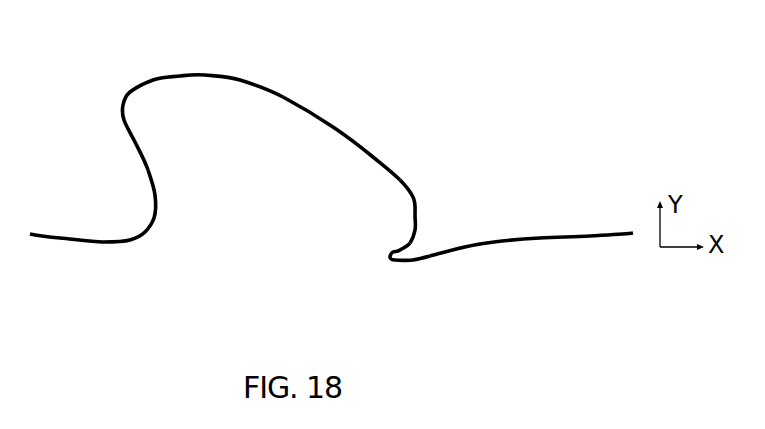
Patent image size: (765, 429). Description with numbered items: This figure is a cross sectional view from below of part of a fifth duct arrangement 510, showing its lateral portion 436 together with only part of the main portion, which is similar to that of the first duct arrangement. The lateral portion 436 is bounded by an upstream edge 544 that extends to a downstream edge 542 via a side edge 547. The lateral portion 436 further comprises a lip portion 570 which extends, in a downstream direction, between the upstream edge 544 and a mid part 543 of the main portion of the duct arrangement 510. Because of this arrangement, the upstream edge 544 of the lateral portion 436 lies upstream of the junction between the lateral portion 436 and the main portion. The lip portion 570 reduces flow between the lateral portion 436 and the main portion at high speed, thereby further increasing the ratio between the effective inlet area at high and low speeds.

The fifth duct arrangement 510 is at (331, 159).
The downstream edge 542 is at (145, 173).
The side edge 547 is at (250, 80).
The lateral portion 436 is at (342, 157).
The upstream edge 544 is at (415, 193).
The lip portion 570 is at (405, 262).
The mid part 543 is at (570, 238).